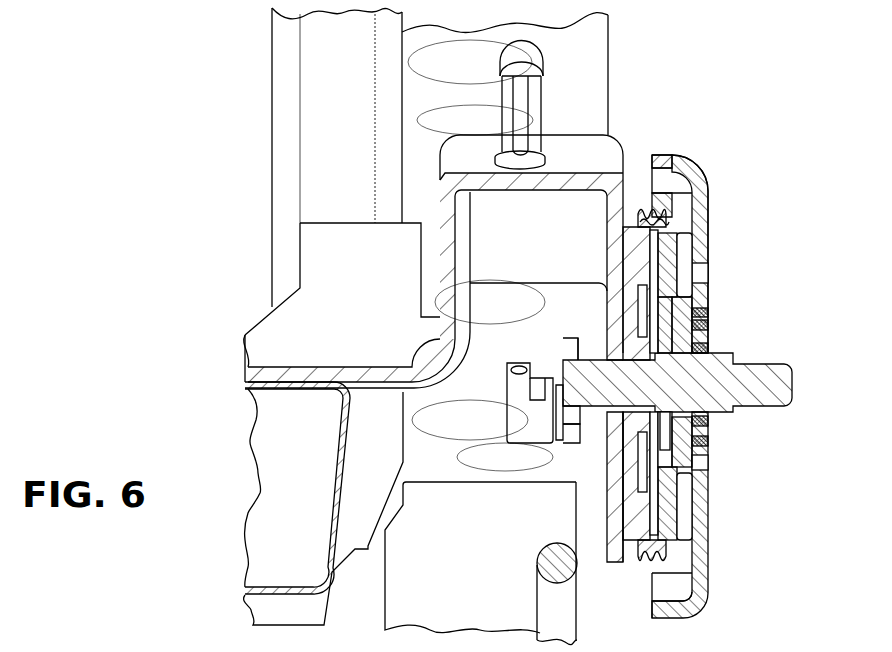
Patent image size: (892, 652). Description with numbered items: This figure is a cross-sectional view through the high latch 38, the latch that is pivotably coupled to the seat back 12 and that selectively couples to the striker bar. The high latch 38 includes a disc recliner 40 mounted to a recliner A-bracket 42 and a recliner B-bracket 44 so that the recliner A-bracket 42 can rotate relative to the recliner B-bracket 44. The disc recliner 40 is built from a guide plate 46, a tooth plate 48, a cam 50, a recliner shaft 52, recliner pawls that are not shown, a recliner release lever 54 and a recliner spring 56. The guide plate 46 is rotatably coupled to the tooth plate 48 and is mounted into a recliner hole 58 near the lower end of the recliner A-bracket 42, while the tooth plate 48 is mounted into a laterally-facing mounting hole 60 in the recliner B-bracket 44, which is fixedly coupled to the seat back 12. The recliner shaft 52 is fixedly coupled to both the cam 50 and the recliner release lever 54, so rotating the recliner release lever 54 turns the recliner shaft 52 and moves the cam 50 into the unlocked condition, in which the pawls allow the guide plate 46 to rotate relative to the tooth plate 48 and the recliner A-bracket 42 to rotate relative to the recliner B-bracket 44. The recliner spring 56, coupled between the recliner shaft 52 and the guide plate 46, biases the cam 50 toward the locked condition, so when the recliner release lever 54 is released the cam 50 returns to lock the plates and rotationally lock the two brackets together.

The seat back 12 is at (612, 27).
The high latch 38 is at (708, 263).
The disc recliner 40 is at (688, 188).
The recliner A-bracket 42 is at (715, 515).
The recliner B-bracket 44 is at (614, 568).
The guide plate 46 is at (672, 255).
The tooth plate 48 is at (664, 205).
The cam 50 is at (668, 440).
The recliner shaft 52 is at (794, 356).
The recliner release lever 54 is at (527, 425).
The recliner spring 56 is at (708, 323).
The recliner hole 58 is at (702, 290).
The mounting hole 60 is at (607, 478).